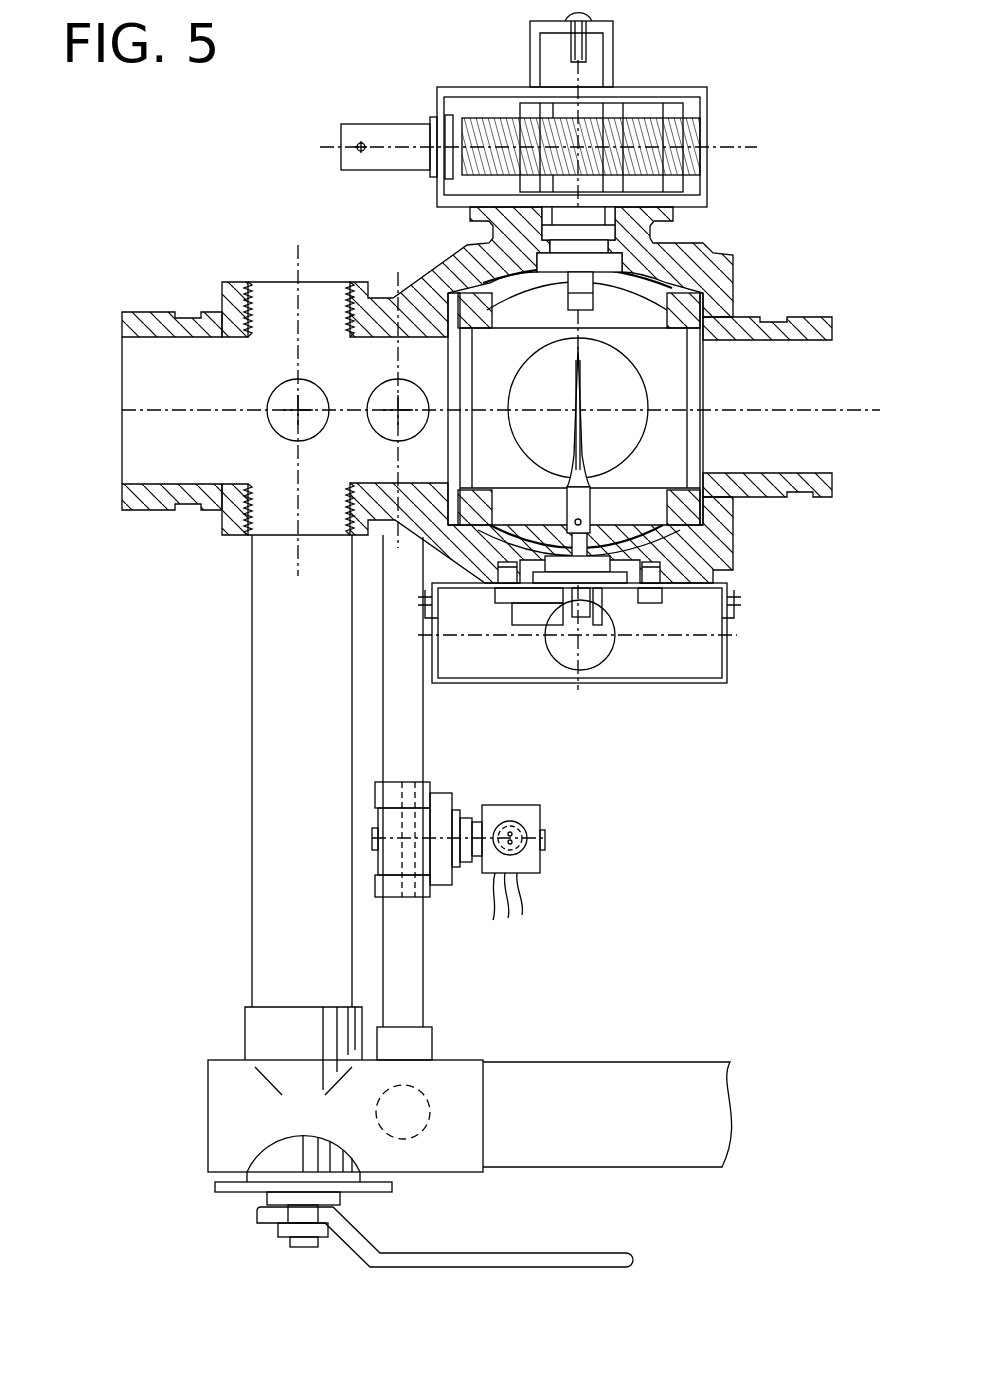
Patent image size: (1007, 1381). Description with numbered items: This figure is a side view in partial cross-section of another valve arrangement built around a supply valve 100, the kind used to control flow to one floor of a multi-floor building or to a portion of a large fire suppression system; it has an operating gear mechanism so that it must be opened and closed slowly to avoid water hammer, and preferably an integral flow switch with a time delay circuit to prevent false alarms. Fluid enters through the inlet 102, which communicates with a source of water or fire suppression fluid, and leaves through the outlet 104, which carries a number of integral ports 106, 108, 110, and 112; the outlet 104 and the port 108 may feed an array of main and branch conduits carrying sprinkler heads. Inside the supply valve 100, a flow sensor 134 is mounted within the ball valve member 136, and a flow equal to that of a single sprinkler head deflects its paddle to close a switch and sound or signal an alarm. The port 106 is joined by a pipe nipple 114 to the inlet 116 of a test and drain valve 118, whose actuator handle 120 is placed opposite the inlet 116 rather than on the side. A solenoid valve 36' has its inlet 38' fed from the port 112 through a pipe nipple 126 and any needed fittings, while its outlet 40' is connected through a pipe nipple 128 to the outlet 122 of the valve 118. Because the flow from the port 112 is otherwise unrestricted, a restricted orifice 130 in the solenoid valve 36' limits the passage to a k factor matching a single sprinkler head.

The supply valve 100 is at (735, 537).
The inlet 102 is at (833, 481).
The outlet 104 is at (122, 440).
The outlet port 106 is at (252, 539).
The outlet port 108 is at (246, 320).
The outlet port 110 is at (276, 432).
The outlet port 112 is at (418, 378).
The pipe nipple 114 is at (252, 770).
The inlet 116 is at (270, 1017).
The test and drain valve 118 is at (440, 1160).
The actuator handle 120 is at (527, 1262).
The outlet 122 is at (477, 1065).
The pipe nipple 126 is at (423, 700).
The pipe nipple 128 is at (425, 980).
The restricted orifice 130 is at (450, 790).
The flow sensor 134 is at (598, 500).
The ball valve member 136 is at (590, 512).
The solenoid valve 36' is at (512, 816).
The inlet of the solenoid valve 38' is at (439, 810).
The outlet of the solenoid valve 40' is at (489, 920).